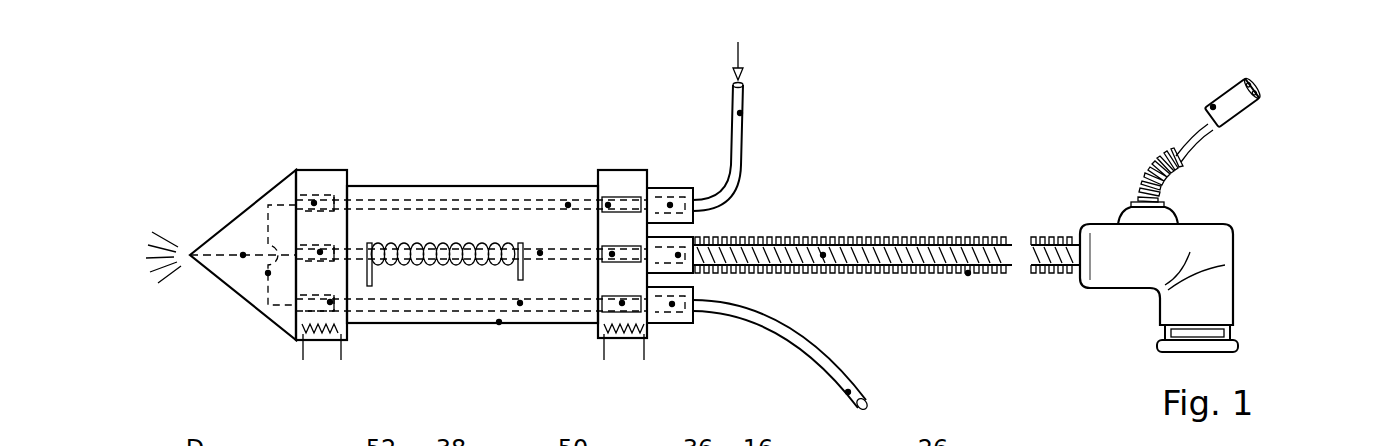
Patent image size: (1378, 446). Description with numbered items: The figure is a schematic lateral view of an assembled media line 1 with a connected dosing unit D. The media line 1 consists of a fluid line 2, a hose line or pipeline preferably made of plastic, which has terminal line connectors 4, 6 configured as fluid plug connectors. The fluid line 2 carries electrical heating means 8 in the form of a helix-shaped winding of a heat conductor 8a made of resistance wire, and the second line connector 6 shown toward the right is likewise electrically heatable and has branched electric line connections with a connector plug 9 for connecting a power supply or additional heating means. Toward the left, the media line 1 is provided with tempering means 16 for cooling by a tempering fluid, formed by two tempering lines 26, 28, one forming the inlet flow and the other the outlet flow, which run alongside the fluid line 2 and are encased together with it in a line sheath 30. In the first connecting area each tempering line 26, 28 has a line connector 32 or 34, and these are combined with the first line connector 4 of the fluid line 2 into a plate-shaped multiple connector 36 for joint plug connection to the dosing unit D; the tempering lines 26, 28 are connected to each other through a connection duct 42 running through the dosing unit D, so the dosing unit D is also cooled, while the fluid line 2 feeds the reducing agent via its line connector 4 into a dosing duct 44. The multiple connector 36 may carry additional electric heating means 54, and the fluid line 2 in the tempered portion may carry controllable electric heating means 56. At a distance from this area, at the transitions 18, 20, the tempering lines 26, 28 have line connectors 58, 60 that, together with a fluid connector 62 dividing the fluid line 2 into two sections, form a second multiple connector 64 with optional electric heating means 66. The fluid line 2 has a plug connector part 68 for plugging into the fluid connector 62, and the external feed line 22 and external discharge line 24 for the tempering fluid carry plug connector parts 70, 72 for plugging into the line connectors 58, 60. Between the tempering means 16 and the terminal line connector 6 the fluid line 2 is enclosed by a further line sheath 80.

The media line 1 is at (963, 135).
The fluid line 2 is at (540, 253).
The line connector 4 is at (320, 252).
The line connector 6 is at (1214, 243).
The electrical heating means 8 is at (993, 238).
The heat conductor 8a is at (880, 237).
The connector plug 9 is at (1213, 107).
The tempering means 16 is at (398, 187).
The transition 18 is at (655, 183).
The transition 20 is at (658, 326).
The external feed line 22 is at (740, 113).
The external discharge line 24 is at (848, 392).
The tempering line 26 is at (568, 205).
The tempering line 28 is at (520, 303).
The line sheath 30 is at (499, 322).
The line connector 32 is at (314, 203).
The line connector 34 is at (330, 302).
The multiple connector 36 is at (303, 172).
The connection duct 42 is at (268, 273).
The dosing duct 44 is at (243, 255).
The electric heating means 54 is at (320, 337).
The electric heating means 56 is at (444, 268).
The line connector 58 is at (608, 205).
The line connector 60 is at (622, 303).
The fluid connector 62 is at (612, 254).
The multiple connector 64 is at (625, 170).
The electric heating means 66 is at (632, 326).
The plug connector part 68 is at (678, 255).
The plug connector part 70 is at (670, 205).
The plug connector part 72 is at (672, 304).
The line sheath 80 is at (968, 273).
The dosing unit D is at (255, 318).